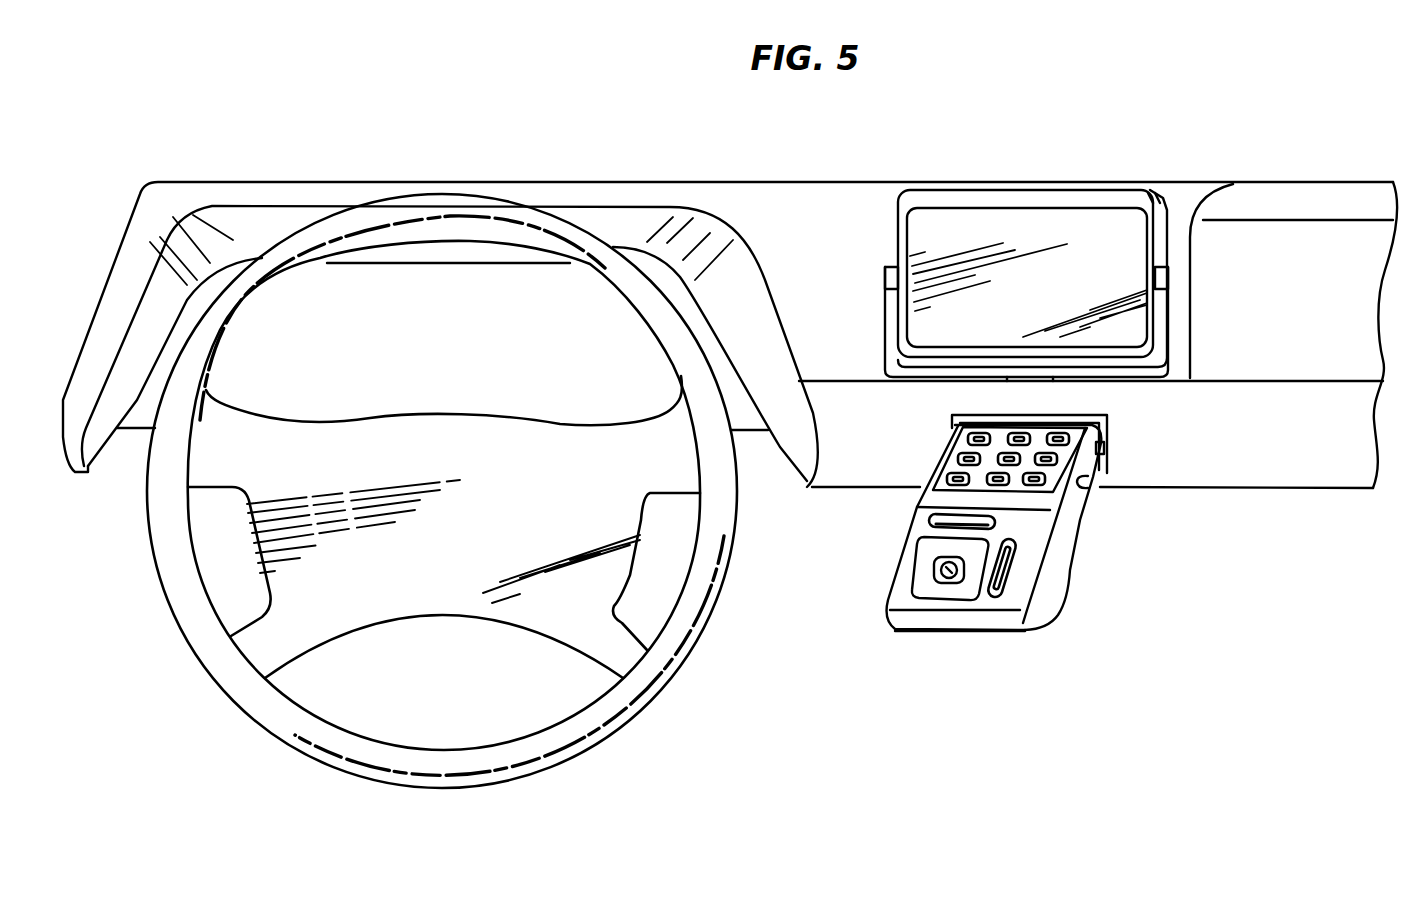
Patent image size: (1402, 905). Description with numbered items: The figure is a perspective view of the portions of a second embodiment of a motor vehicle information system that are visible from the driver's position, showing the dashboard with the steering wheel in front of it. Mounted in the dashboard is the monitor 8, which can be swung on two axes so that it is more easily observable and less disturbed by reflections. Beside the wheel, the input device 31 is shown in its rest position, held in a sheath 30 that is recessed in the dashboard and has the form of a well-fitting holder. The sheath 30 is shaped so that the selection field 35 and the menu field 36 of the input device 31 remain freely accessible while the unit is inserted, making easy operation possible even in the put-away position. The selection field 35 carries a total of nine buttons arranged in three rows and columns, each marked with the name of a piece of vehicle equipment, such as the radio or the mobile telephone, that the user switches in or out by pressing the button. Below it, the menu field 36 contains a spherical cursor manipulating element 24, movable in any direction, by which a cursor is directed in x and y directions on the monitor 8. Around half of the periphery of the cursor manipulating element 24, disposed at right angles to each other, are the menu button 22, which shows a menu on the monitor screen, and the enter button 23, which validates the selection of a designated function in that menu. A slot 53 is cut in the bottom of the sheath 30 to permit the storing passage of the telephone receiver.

The monitor 8 is at (1078, 207).
The menu button 22 is at (930, 522).
The enter button 23 is at (1015, 566).
The cursor manipulating element 24 is at (951, 583).
The sheath 30 is at (1107, 462).
The input device 31 is at (1003, 638).
The selection field 35 is at (962, 430).
The menu field 36 is at (903, 563).
The slot 53 is at (1067, 490).